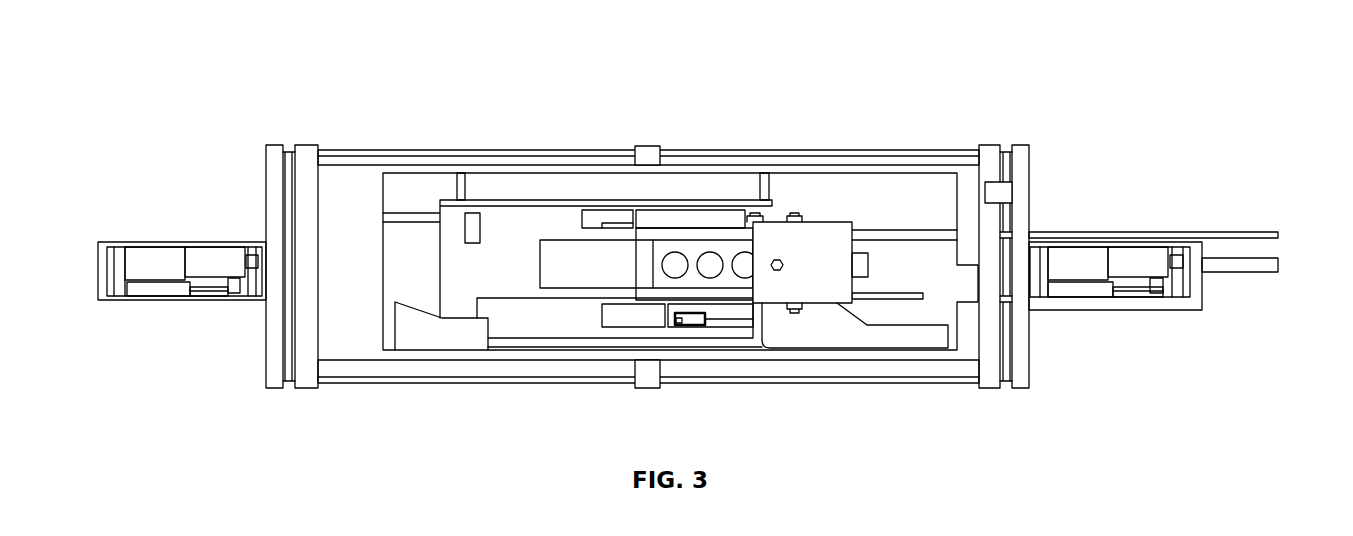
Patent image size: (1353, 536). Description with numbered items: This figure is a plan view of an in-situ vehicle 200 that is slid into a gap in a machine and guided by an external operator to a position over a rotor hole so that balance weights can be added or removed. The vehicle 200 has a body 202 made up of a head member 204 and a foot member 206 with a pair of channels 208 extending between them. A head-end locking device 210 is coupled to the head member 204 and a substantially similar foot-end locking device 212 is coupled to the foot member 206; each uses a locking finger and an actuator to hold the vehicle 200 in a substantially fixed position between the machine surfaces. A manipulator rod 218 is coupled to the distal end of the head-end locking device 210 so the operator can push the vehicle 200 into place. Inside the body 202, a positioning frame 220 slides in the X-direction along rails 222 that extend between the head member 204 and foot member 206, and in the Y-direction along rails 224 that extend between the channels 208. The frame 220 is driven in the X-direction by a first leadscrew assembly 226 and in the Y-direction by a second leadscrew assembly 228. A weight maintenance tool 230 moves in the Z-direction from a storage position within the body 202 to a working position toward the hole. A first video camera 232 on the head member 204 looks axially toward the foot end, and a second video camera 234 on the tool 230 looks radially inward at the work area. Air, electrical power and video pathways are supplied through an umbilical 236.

The in-situ vehicle 200 is at (186, 82).
The body 202 is at (893, 157).
The head member 204 is at (1005, 386).
The foot member 206 is at (290, 388).
The channels 208 is at (688, 151).
The head-end locking device 210 is at (1135, 312).
The foot-end locking device 212 is at (162, 302).
The manipulator rod 218 is at (1225, 273).
The positioning frame 220 is at (510, 223).
The rails 222 is at (557, 176).
The rails 224 is at (460, 186).
The first leadscrew assembly 226 is at (648, 328).
The second leadscrew assembly 228 is at (463, 227).
The weight maintenance tool 230 is at (833, 283).
The first video camera 232 is at (1003, 192).
The second video camera 234 is at (868, 270).
The umbilical 236 is at (1153, 231).